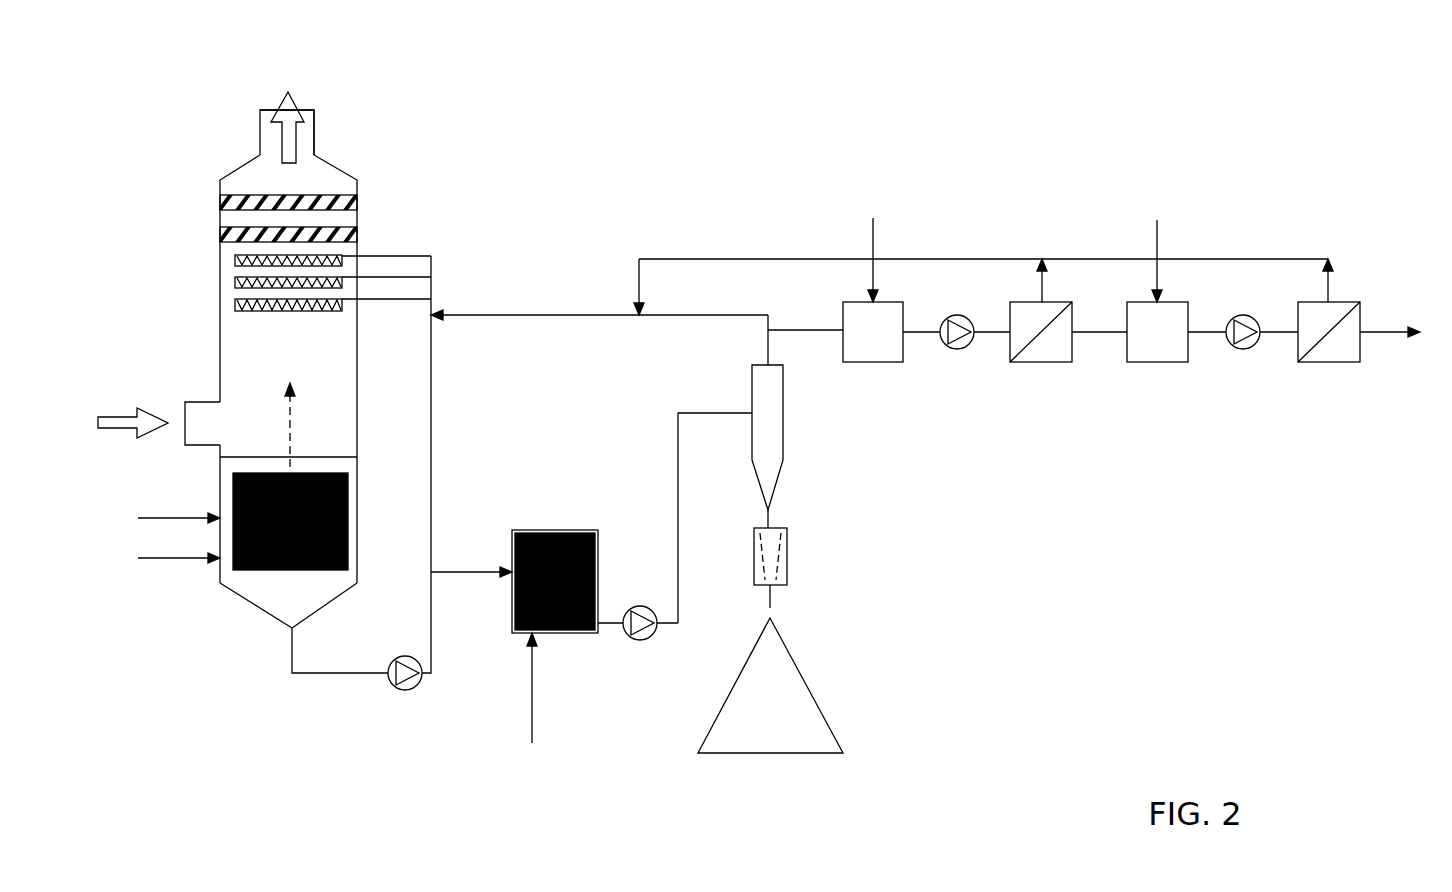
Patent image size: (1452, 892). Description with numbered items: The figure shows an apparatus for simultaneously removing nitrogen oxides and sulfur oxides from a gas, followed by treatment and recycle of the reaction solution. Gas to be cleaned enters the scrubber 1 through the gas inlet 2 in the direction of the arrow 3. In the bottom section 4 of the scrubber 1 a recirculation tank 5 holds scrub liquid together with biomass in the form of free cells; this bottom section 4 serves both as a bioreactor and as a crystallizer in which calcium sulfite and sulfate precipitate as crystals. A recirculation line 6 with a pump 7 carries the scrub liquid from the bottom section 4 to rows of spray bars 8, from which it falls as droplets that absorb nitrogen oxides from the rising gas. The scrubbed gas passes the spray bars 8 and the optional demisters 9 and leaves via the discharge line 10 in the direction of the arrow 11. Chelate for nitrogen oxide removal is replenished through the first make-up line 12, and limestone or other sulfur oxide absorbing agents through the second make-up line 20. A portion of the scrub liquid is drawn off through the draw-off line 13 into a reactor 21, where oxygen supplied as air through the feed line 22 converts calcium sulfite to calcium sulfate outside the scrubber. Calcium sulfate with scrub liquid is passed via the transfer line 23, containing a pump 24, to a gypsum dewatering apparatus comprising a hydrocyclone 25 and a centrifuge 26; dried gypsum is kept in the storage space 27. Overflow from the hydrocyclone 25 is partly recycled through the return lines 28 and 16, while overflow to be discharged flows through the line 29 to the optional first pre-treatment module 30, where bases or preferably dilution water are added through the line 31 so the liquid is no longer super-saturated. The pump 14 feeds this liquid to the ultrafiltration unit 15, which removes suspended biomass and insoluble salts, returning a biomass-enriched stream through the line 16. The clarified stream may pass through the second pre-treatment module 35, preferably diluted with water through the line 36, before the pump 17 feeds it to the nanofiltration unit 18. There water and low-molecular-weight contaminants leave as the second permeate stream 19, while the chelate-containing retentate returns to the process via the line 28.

The scrubber 1 is at (327, 158).
The gas inlet 2 is at (203, 402).
The arrow 3 is at (117, 417).
The bottom section 4 is at (323, 597).
The recirculation tank 5 is at (348, 490).
The recirculation line 6 is at (290, 653).
The pump 7 is at (413, 688).
The spray bars 8 is at (235, 257).
The demisters 9 is at (337, 195).
The discharge line 10 is at (317, 110).
The arrow 11 is at (283, 95).
The first make-up line 12 is at (138, 558).
The draw-off line 13 is at (455, 572).
The pump 14 is at (958, 352).
The ultrafiltration unit 15 is at (1035, 362).
The return line 16 is at (1043, 285).
The pump 17 is at (1245, 352).
The nanofiltration unit 18 is at (1320, 362).
The second permeate stream 19 is at (1380, 332).
The second make-up line 20 is at (138, 518).
The reactor 21 is at (598, 535).
The feed line 22 is at (532, 705).
The transfer line 23 is at (678, 477).
The pump 24 is at (655, 640).
The hydrocyclone 25 is at (783, 423).
The centrifuge 26 is at (787, 547).
The storage space 27 is at (813, 690).
The return line 28 is at (1330, 285).
The line 29 is at (787, 330).
The first pre-treatment module 30 is at (865, 362).
The line 31 is at (876, 252).
The second pre-treatment module 35 is at (1150, 362).
The line 36 is at (1160, 258).